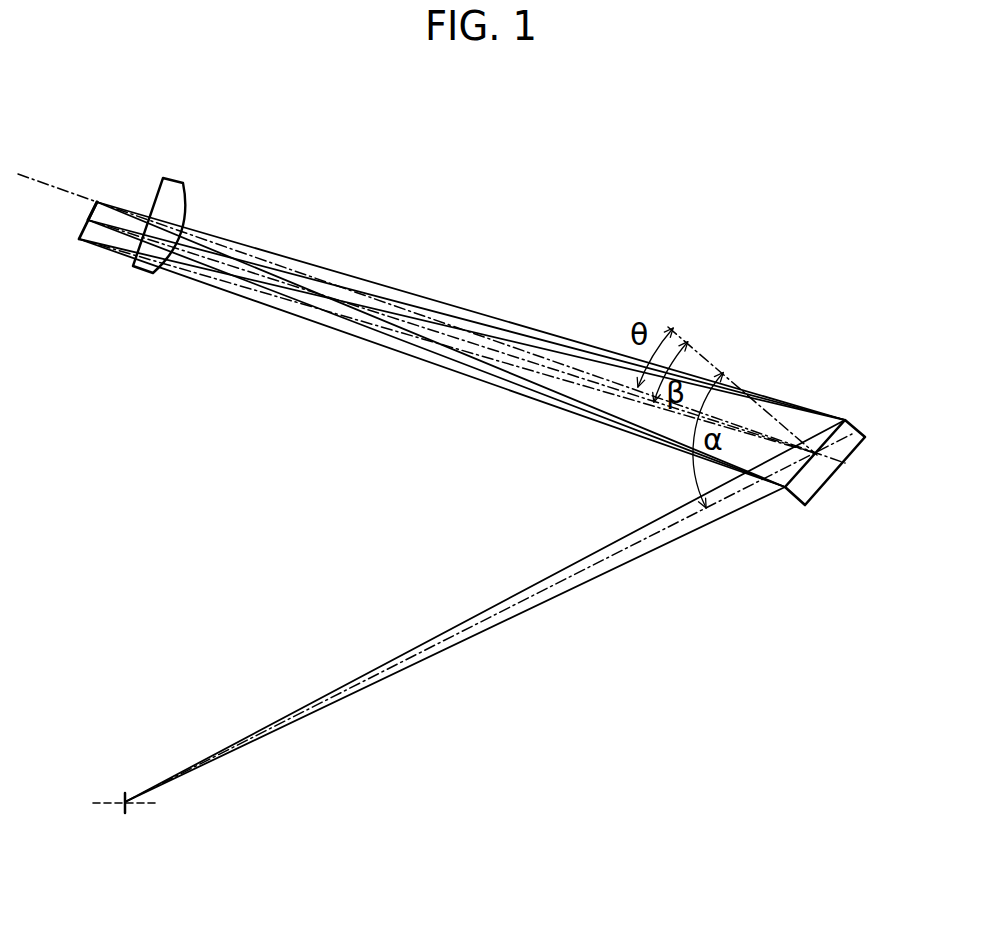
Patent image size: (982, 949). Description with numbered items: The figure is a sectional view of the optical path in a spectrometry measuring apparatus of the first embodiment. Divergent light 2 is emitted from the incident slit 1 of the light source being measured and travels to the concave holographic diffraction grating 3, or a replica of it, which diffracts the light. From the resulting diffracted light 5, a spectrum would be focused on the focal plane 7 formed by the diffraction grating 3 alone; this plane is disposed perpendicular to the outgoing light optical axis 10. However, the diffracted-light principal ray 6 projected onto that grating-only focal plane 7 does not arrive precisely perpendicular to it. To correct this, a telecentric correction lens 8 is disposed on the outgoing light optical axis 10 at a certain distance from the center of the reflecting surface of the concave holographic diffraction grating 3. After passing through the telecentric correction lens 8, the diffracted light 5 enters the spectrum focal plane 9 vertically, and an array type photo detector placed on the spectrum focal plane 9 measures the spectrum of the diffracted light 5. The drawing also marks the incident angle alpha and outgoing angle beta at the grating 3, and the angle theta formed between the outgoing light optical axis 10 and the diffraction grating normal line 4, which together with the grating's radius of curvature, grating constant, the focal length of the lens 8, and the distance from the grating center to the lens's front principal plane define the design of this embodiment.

The incident slit 1 is at (126, 797).
The divergent light 2 is at (393, 608).
The concave holographic diffraction grating 3 is at (801, 504).
The diffraction grating normal line 4 is at (702, 347).
The diffracted light 5 is at (597, 409).
The diffracted-light principal ray 6 is at (500, 361).
The focal plane formed of only the diffraction grating 7 is at (79, 239).
The telecentric correction lens 8 is at (173, 197).
The spectrum focal plane 9 is at (97, 202).
The outgoing light optical axis 10 is at (66, 190).